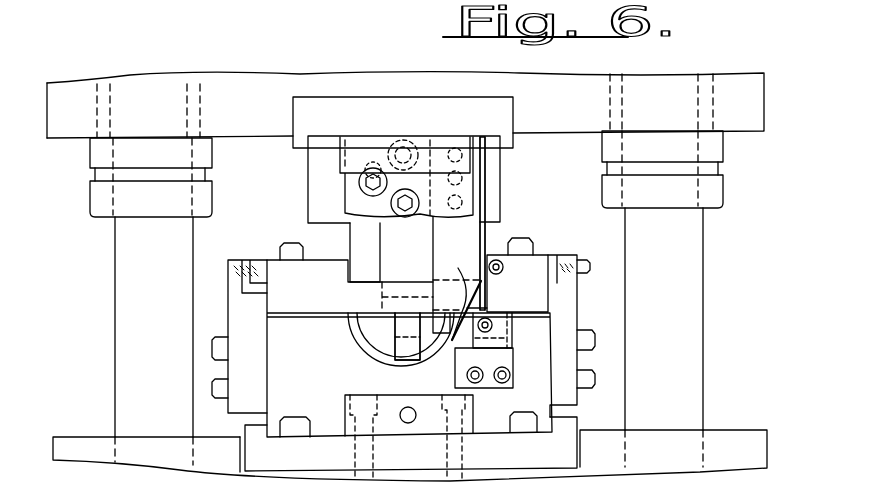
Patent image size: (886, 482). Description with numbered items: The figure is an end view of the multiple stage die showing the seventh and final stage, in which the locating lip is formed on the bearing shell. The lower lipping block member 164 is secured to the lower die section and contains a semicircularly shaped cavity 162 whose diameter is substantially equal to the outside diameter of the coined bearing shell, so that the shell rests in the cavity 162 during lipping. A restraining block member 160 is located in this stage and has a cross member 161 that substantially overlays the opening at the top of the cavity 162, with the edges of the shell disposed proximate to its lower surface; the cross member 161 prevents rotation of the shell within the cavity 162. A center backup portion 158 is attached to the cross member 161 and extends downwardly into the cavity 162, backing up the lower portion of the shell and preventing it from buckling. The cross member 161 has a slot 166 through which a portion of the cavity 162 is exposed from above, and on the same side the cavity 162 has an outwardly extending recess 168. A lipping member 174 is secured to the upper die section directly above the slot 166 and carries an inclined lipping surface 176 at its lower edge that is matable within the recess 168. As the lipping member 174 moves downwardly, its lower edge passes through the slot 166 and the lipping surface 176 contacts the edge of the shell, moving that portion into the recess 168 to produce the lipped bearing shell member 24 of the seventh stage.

The restraining block member 160 is at (262, 307).
The cross member 161 is at (272, 268).
The semicircularly shaped cavity 162 is at (354, 341).
The lower lipping block member 164 is at (280, 395).
The slot 166 is at (482, 293).
The outwardly extending recess 168 is at (487, 313).
The lipping member 174 is at (478, 237).
The inclined lipping surface 176 is at (459, 294).
The bearing shell member 24 is at (374, 343).
The center backup portion 158 is at (413, 357).